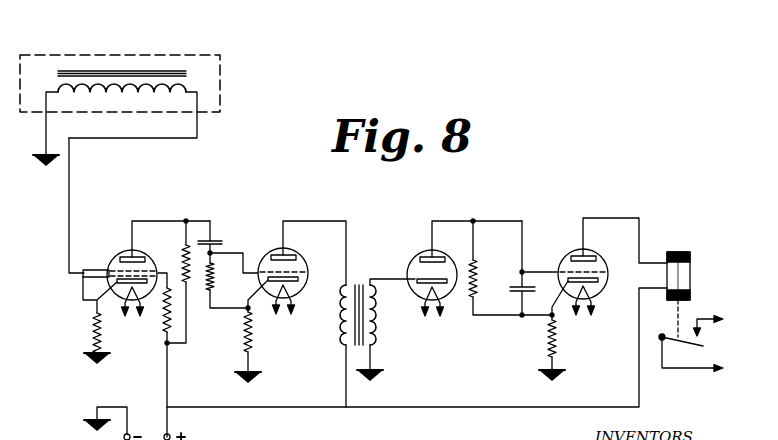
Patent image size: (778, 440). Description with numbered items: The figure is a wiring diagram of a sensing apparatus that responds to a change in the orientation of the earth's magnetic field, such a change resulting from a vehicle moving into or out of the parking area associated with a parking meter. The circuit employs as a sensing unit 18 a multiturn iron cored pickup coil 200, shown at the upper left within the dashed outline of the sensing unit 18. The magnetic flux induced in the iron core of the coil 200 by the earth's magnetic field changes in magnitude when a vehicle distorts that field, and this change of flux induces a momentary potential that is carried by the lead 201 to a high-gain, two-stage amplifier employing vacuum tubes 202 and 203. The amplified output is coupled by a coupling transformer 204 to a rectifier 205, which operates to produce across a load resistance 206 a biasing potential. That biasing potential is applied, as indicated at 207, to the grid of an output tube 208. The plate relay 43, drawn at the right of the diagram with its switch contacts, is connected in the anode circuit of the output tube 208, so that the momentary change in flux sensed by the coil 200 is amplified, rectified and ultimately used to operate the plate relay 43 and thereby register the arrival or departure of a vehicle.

The sensing unit 18 is at (223, 69).
The pickup coil 200 is at (53, 85).
The lead wire 201 is at (72, 187).
The vacuum tube 202 is at (120, 250).
The vacuum tube 203 is at (270, 247).
The coupling transformer 204 is at (360, 282).
The rectifier 205 is at (419, 247).
The load resistance 206 is at (478, 268).
The biasing potential application point 207 is at (534, 270).
The output tube 208 is at (598, 253).
The plate relay 43 is at (678, 252).